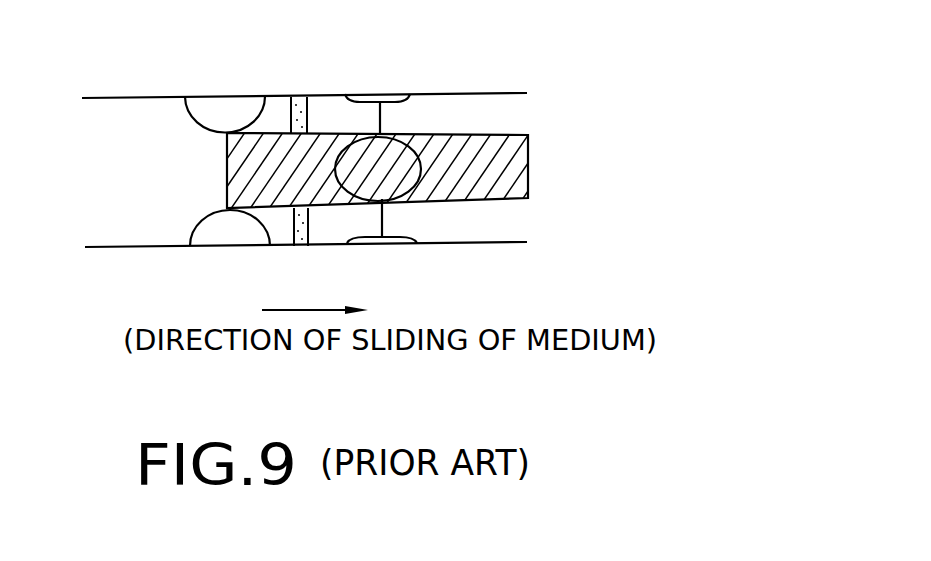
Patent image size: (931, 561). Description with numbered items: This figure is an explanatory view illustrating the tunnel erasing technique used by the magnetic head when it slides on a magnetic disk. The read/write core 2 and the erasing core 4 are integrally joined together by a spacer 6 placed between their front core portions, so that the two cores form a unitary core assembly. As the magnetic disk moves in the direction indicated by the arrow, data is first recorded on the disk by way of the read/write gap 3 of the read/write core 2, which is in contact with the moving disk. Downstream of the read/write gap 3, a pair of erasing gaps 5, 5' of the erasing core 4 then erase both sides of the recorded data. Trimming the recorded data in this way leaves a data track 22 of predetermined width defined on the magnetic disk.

The magnetic read/write core 2 is at (131, 107).
The read/write gap 3 is at (228, 178).
The magnetic erasing core 4 is at (476, 102).
The erasing gap 5 is at (388, 90).
The erasing gap 5' is at (406, 242).
The spacer 6 is at (300, 250).
The data track 22 is at (508, 163).